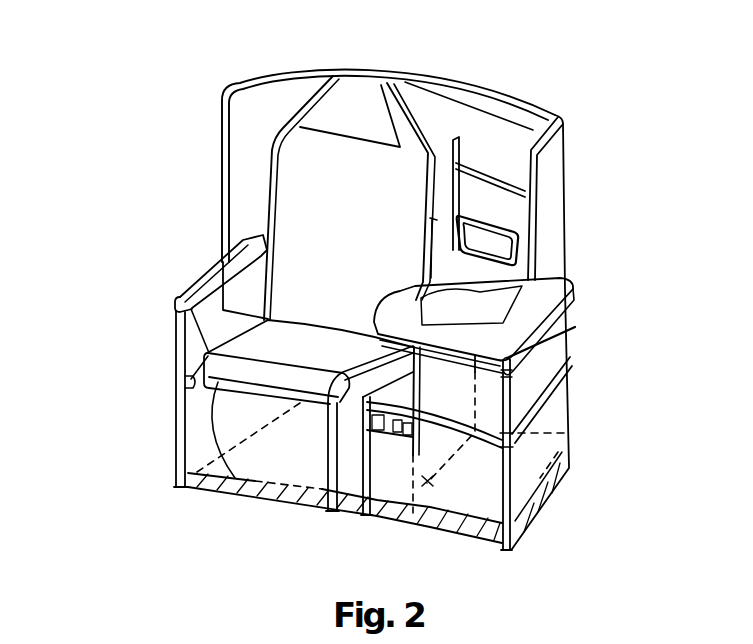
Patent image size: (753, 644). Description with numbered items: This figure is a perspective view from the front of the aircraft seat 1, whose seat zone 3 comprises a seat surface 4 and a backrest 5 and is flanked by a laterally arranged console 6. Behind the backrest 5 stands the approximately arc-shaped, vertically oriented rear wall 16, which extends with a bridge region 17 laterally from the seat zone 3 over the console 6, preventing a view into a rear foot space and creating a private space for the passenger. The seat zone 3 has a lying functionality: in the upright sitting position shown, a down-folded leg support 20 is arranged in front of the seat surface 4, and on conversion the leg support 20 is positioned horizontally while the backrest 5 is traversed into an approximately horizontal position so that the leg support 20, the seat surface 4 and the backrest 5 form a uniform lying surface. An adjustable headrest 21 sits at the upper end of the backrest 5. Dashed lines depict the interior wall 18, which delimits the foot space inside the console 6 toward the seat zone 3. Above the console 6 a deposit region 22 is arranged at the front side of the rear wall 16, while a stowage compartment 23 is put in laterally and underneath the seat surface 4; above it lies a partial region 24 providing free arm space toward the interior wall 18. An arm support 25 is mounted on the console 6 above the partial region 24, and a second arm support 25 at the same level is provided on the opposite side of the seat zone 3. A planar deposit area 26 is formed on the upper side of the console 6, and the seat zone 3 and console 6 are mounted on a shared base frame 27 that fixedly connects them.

The aircraft seat 1 is at (107, 298).
The seat zone 3 is at (297, 280).
The seat surface 4 is at (287, 353).
The backrest 5 is at (310, 163).
The console 6 is at (562, 350).
The rear wall 16 is at (252, 103).
The bridge region 17 is at (500, 100).
The interior wall 18 is at (427, 480).
The leg support 20 is at (205, 385).
The headrest 21 is at (343, 98).
The deposit region 22 is at (510, 207).
The stowage compartment 23 is at (402, 393).
The partial region 24 is at (413, 370).
The arm support 25 is at (217, 272).
The planar deposit area 26 is at (482, 278).
The base frame 27 is at (313, 497).